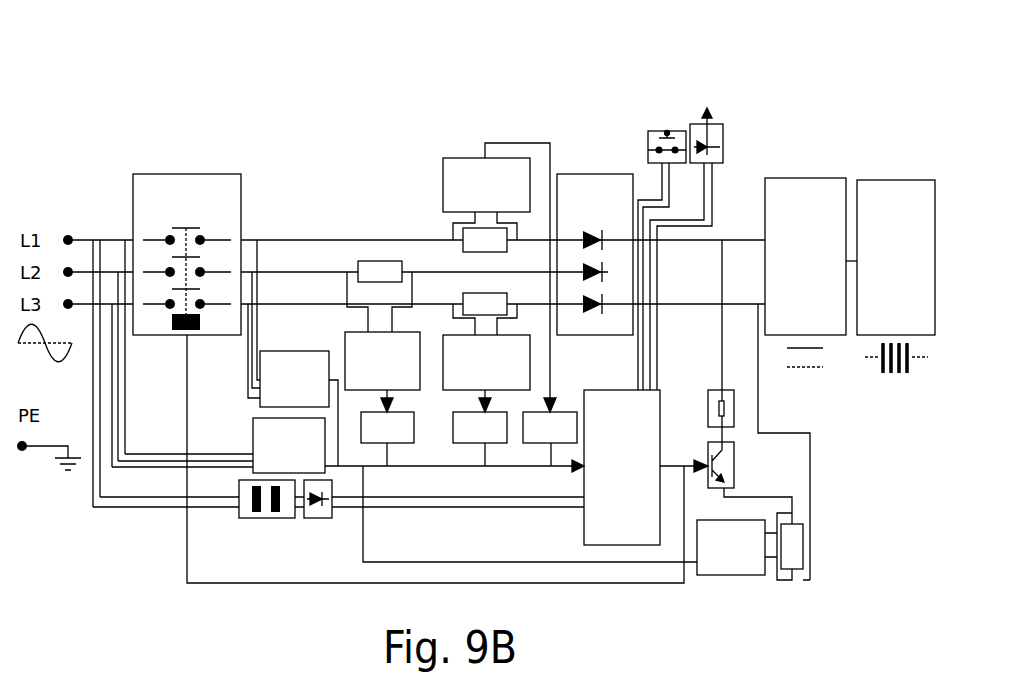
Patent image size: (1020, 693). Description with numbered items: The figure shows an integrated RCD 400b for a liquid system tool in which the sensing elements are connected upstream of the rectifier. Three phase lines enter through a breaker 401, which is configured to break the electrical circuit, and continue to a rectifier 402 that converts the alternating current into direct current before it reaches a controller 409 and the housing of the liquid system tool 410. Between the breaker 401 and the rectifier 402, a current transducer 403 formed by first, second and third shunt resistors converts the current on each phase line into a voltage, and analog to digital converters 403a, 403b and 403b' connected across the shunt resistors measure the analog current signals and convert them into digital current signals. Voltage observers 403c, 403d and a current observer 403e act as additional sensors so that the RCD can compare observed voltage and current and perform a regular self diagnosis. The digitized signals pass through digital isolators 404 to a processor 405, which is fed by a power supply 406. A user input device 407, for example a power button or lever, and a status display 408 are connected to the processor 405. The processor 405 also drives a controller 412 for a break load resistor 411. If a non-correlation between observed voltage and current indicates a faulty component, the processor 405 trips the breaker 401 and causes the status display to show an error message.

The integrated RCD 400b is at (826, 87).
The breaker 401 is at (187, 254).
The rectifier 402 is at (595, 254).
The current transducer 403 is at (463, 296).
The analog to digital converter 403a is at (499, 277).
The analog to digital converter 403b is at (486, 373).
The analog-to-digital converter 403b' is at (382, 372).
The voltage observer 403c is at (293, 353).
The voltage observer 403d is at (418, 445).
The current observer 403e is at (737, 547).
The digital isolators 404 is at (532, 443).
The processor 405 is at (646, 467).
The power supply 406 is at (283, 518).
The user input device 407 is at (648, 141).
The status display 408 is at (723, 136).
The controller 409 is at (805, 272).
The housing of the liquid system tool 410 is at (890, 276).
The break load resistor 411 is at (708, 391).
The controller for break load resistor 412 is at (735, 451).